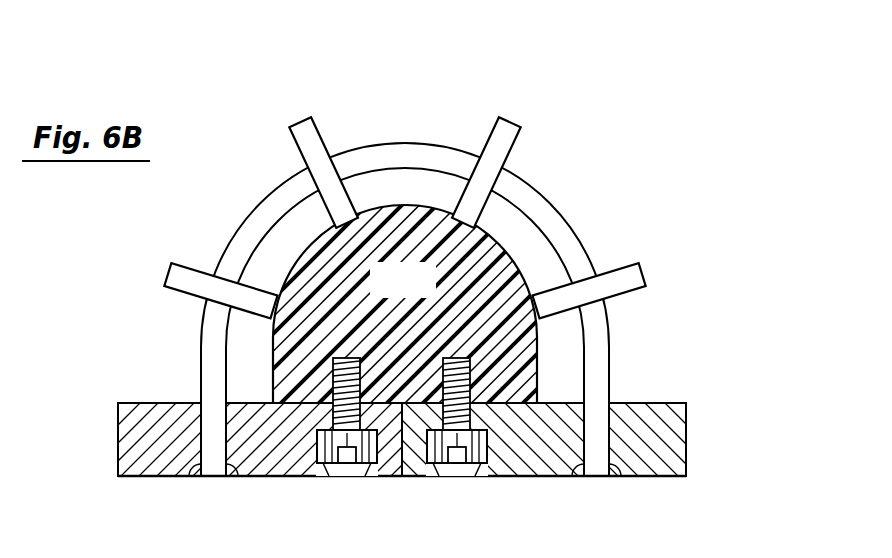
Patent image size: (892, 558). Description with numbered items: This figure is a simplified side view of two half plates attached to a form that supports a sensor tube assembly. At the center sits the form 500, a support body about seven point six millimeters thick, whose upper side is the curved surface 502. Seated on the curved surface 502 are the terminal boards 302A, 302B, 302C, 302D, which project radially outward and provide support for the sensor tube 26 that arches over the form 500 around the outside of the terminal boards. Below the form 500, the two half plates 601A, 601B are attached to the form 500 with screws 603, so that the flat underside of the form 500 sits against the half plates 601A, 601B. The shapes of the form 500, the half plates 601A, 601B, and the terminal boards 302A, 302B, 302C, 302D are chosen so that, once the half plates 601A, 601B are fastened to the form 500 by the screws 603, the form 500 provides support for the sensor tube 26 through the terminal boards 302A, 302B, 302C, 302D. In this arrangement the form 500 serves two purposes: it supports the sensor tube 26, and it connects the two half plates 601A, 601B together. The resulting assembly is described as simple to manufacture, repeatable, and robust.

The sensor tube 26 is at (405, 143).
The form 500 is at (434, 295).
The curved surface 502 is at (520, 262).
The terminal board 302A is at (169, 276).
The terminal board 302B is at (300, 121).
The terminal board 302C is at (511, 121).
The terminal board 302D is at (643, 276).
The half plate 601A is at (148, 403).
The half plate 601B is at (652, 403).
The screws 603 is at (440, 477).